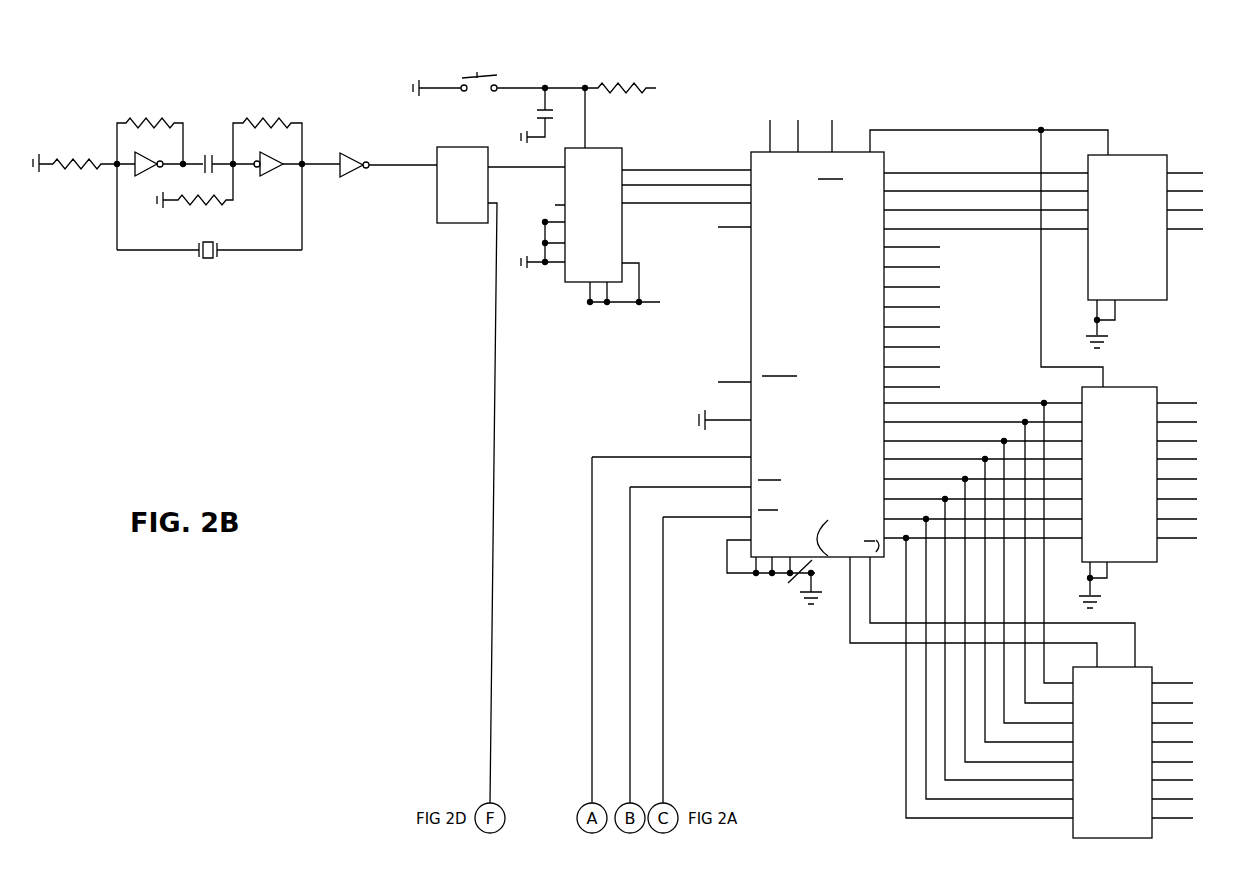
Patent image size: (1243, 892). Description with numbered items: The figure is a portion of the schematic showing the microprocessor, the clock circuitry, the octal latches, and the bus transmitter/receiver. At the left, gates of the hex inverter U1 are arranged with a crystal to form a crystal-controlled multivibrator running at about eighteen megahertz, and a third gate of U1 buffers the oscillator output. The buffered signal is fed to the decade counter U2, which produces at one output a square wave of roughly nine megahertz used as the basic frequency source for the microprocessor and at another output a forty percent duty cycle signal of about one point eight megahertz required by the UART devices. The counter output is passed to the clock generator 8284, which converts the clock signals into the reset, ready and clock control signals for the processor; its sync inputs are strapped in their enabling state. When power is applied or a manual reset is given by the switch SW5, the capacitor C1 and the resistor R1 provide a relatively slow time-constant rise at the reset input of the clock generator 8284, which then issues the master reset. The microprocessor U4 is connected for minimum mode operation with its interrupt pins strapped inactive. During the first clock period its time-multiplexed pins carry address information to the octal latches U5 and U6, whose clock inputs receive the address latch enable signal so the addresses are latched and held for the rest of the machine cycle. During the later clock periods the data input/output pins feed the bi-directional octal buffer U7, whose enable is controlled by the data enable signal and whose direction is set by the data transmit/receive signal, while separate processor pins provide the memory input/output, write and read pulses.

The hex inverter U1 is at (136, 176).
The decade counter U2 is at (500, 463).
The clock generator/driver 8284 is at (636, 199).
The microprocessor U4 is at (863, 460).
The octal latch U5 is at (1155, 241).
The octal latch U6 is at (1135, 369).
The octal bus transmitter/receiver U7 is at (1142, 744).
The resistor R1 is at (637, 89).
The capacitor C1 is at (533, 115).
The reset switch SW5 is at (500, 72).